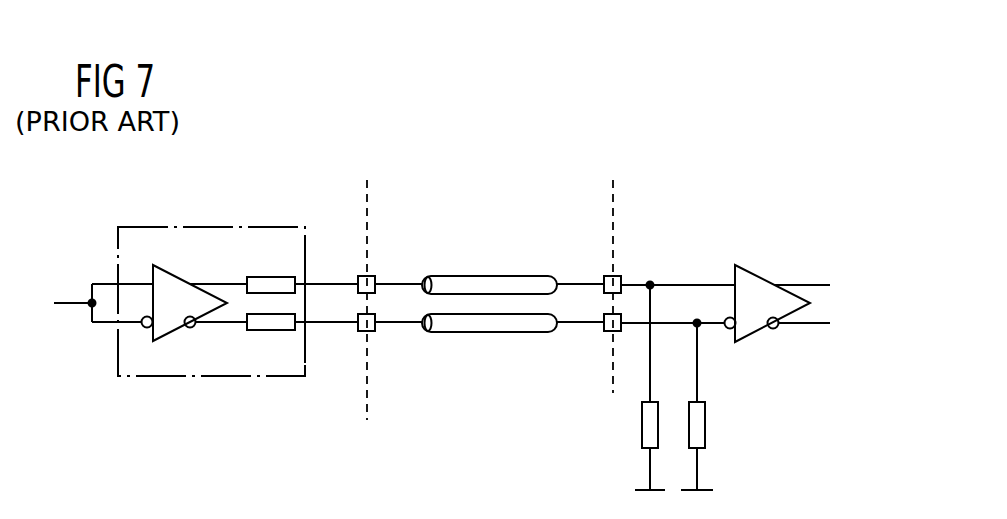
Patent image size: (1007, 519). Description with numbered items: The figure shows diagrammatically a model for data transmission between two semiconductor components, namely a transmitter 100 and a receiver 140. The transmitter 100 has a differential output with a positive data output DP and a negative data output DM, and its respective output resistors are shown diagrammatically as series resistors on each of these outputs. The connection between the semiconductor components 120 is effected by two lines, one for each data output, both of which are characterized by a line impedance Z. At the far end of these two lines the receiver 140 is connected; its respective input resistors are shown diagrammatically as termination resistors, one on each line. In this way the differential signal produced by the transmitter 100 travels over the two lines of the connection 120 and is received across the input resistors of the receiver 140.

The transmitter 100 is at (212, 204).
The connection between the semiconductor components 120 is at (489, 204).
The receiver 140 is at (720, 204).